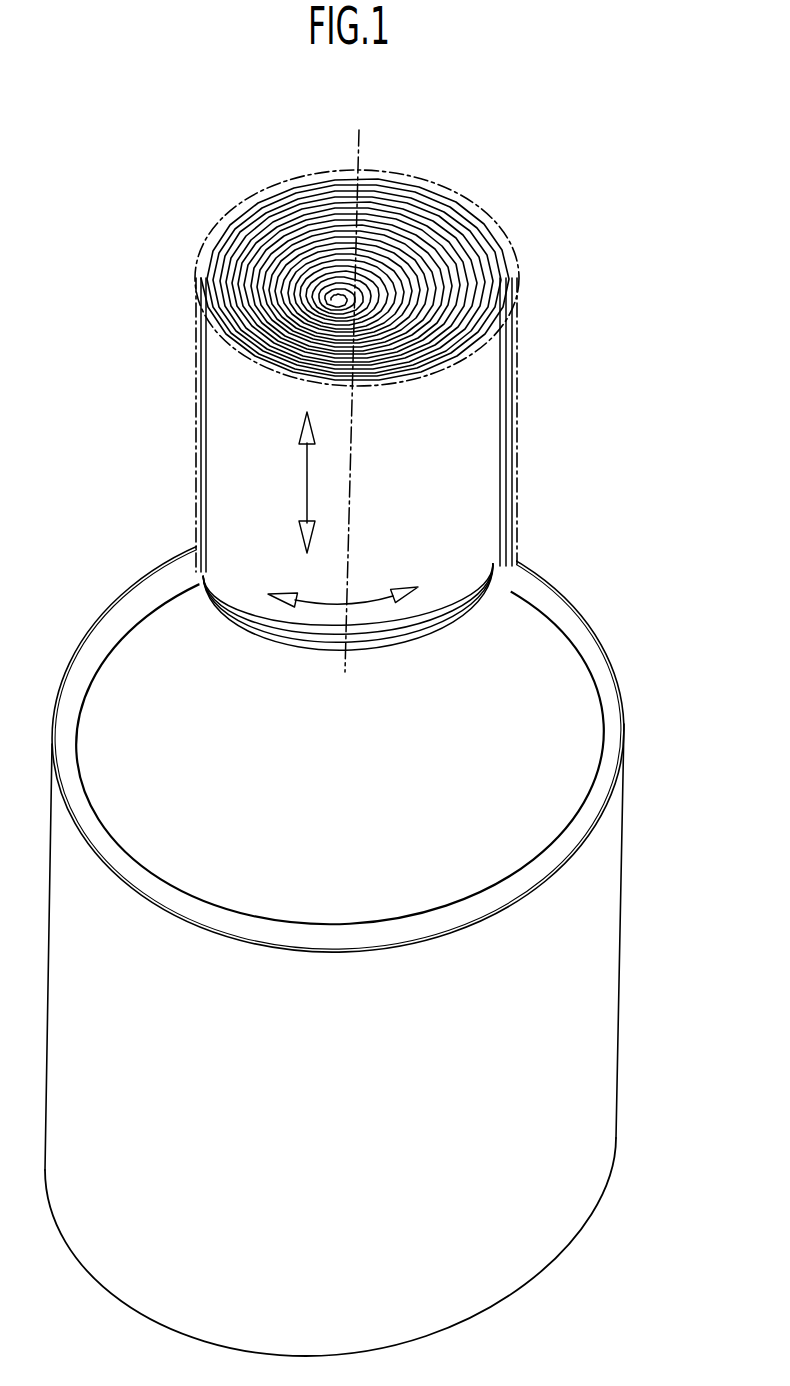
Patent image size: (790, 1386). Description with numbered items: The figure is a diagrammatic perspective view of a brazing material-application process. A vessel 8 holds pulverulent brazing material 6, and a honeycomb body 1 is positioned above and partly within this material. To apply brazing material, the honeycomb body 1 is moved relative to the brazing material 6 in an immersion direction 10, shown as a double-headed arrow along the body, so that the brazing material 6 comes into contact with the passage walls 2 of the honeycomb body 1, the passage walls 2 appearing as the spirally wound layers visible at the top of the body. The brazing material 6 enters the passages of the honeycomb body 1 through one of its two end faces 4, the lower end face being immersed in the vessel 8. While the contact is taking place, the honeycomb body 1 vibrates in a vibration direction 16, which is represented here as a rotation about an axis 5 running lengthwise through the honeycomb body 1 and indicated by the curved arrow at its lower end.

The honeycomb body 1 is at (458, 422).
The passage walls 2 is at (470, 279).
The end face 4 is at (425, 177).
The axis 5 is at (352, 515).
The brazing material 6 is at (552, 713).
The vessel 8 is at (574, 1123).
The immersion direction 10 is at (302, 480).
The vibration direction 16 is at (323, 602).